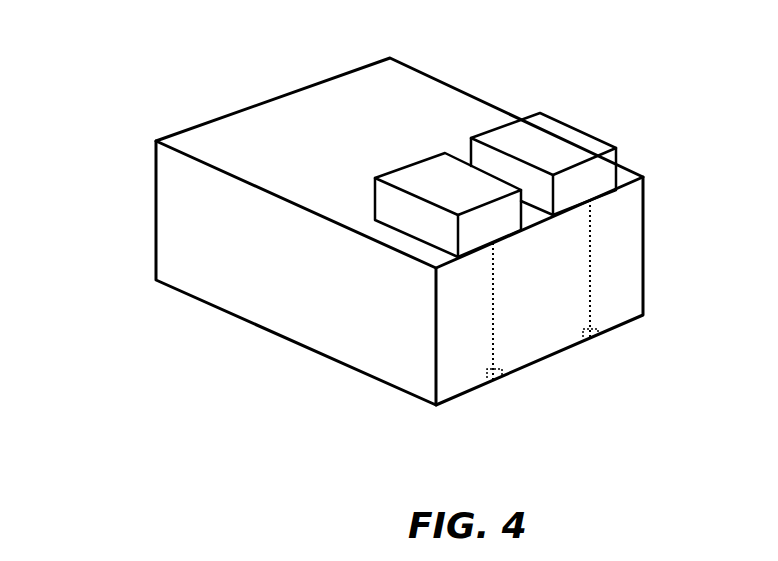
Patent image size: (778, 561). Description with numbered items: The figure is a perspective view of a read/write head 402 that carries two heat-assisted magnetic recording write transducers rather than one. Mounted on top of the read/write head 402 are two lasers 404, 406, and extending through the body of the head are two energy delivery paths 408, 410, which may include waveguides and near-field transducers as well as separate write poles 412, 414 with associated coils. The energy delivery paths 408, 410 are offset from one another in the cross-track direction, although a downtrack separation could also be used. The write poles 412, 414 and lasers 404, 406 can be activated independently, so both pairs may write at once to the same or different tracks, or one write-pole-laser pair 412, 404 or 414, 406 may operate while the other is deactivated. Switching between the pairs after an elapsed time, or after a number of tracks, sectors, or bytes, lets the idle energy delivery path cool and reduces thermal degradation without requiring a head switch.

The read/write head 402 is at (156, 203).
The laser 404 is at (554, 122).
The laser 406 is at (403, 173).
The energy delivery path 408 is at (590, 275).
The energy delivery path 410 is at (495, 360).
The write pole 412 is at (627, 323).
The write pole 414 is at (485, 383).